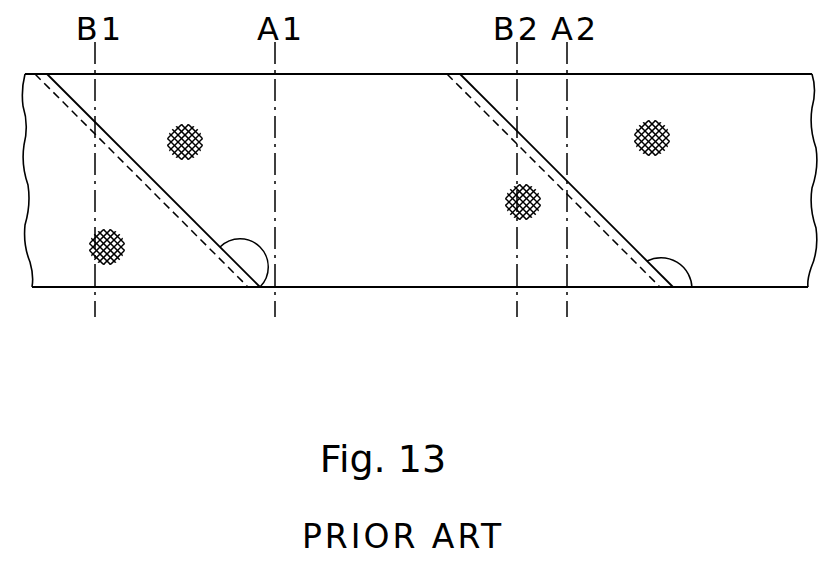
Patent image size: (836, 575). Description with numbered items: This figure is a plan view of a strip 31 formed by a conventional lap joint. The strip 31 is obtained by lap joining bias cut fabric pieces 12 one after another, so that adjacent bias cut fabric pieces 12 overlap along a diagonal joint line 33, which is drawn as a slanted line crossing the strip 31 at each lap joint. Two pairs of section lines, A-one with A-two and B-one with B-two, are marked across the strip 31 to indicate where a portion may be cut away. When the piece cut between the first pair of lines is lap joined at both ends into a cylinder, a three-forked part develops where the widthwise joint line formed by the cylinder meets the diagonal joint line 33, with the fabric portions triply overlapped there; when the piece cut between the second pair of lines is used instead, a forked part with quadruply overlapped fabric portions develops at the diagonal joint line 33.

The bias cut fabric pieces 12 is at (63, 277).
The strip 31 is at (713, 74).
The diagonal joint line 33 is at (260, 287).